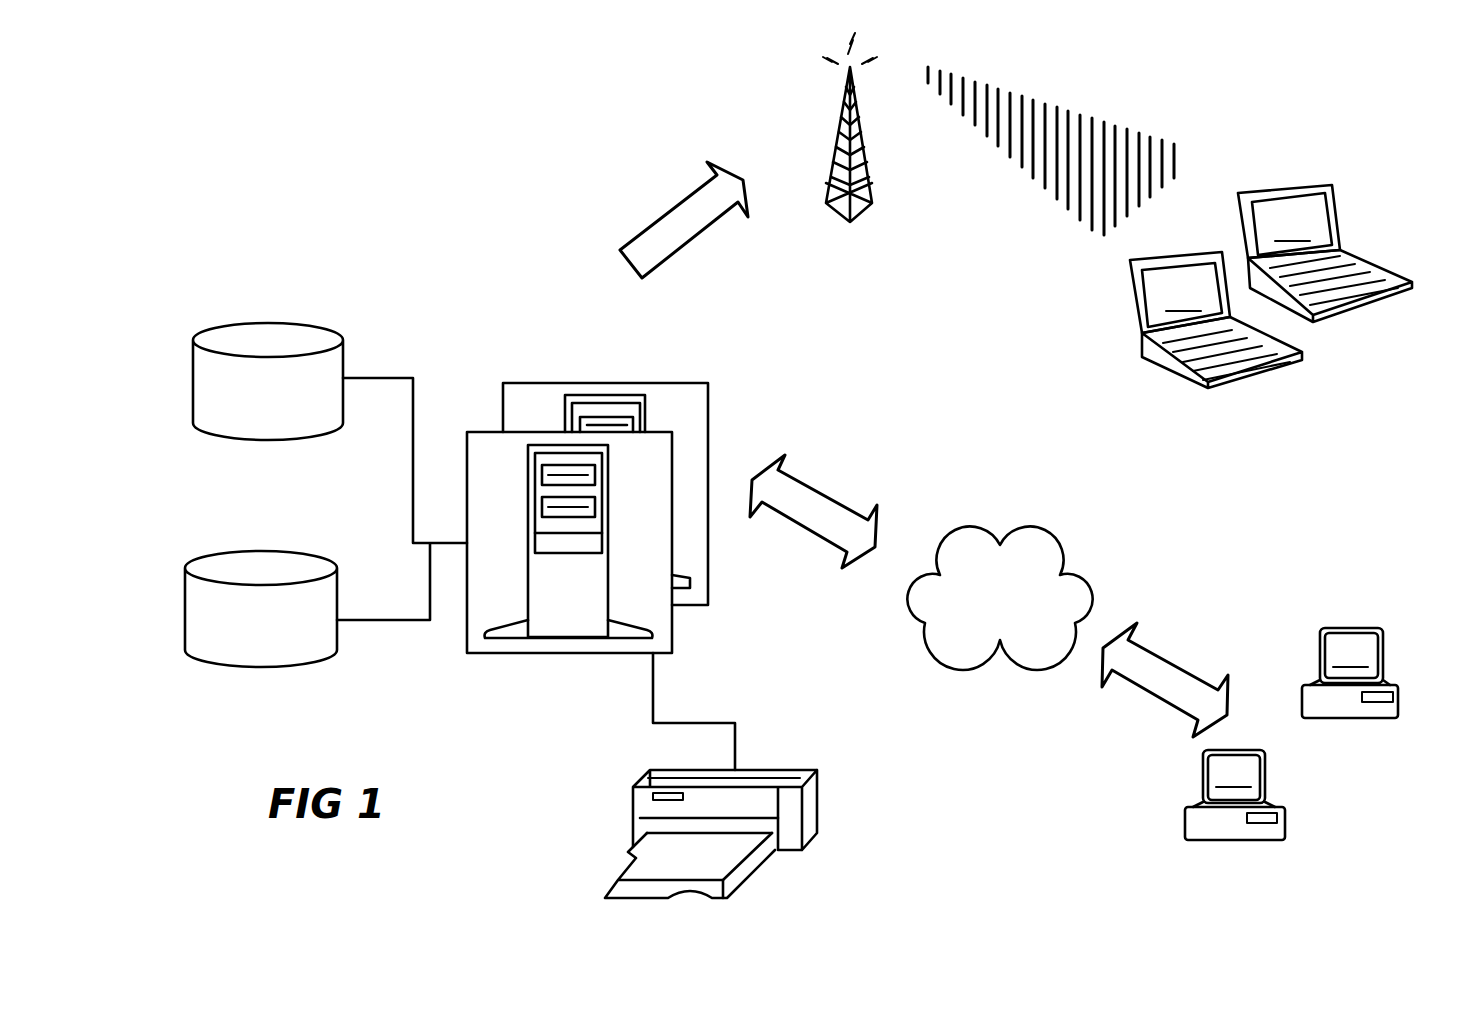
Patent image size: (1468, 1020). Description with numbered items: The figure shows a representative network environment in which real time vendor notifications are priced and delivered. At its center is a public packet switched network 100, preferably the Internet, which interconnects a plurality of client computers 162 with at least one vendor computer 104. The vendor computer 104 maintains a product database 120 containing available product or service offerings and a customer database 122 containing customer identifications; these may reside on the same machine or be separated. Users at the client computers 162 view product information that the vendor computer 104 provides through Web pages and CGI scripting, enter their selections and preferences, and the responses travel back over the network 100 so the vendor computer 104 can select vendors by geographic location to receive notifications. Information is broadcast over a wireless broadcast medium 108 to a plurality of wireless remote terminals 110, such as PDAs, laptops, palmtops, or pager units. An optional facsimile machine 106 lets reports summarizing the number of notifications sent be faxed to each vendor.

The public packet switched network 100 is at (984, 623).
The vendor computer 104 is at (657, 564).
The facsimile machine 106 is at (672, 869).
The broadcast medium 108 is at (858, 148).
The wireless remote terminal 110 is at (1289, 309).
The product database 120 is at (250, 435).
The customer database 122 is at (243, 665).
The client computer 162 is at (1292, 763).